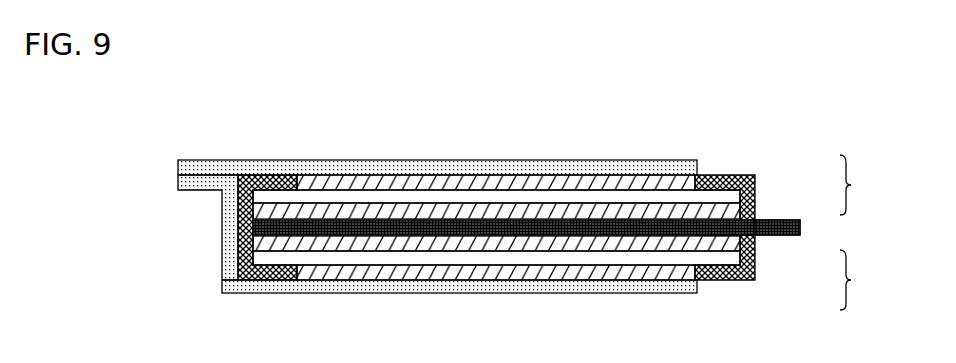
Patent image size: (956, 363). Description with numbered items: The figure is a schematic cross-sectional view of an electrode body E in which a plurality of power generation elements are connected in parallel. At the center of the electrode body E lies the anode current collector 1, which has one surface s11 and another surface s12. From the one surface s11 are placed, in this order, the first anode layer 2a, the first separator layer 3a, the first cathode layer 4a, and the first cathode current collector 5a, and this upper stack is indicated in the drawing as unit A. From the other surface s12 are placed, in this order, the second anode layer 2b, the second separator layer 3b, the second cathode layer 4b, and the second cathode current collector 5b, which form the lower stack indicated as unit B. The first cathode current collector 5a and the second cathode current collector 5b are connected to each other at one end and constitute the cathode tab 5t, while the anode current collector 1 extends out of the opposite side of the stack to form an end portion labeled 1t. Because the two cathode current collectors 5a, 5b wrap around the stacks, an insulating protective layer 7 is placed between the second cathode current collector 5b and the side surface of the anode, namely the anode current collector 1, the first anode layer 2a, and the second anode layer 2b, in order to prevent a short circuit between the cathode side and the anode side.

The anode current collector 1 is at (597, 220).
The electrode tab 1t is at (795, 226).
The first anode layer 2a is at (727, 211).
The second anode layer 2b is at (728, 243).
The first separator layer 3a is at (722, 199).
The second separator layer 3b is at (727, 257).
The first cathode layer 4a is at (690, 183).
The second cathode layer 4b is at (690, 272).
The first cathode current collector 5a is at (413, 170).
The second cathode current collector 5b is at (415, 288).
The cathode tab 5t is at (190, 182).
The insulating protective layer 7 is at (267, 185).
The first cell unit A is at (855, 185).
The second cell unit B is at (855, 280).
The electrode body E is at (747, 111).
The one surface of anode current collector s11 is at (518, 220).
The another surface of anode current collector s12 is at (518, 235).